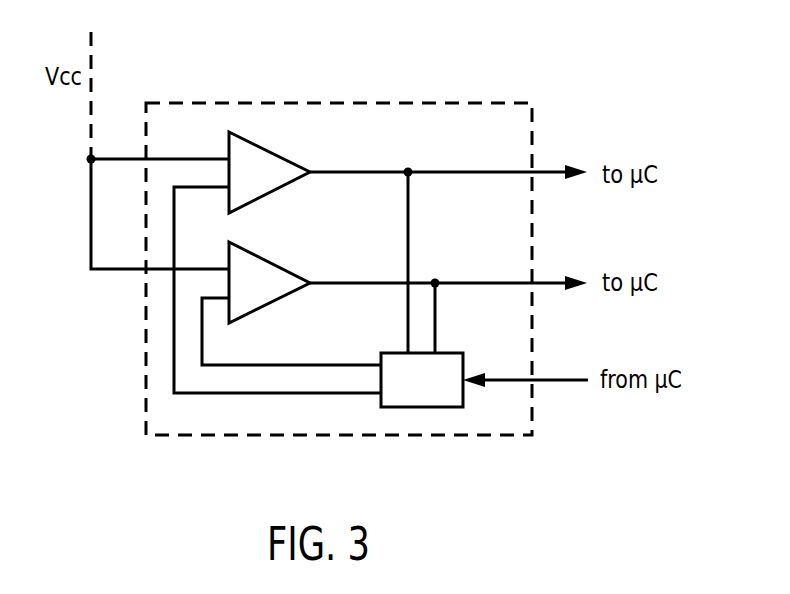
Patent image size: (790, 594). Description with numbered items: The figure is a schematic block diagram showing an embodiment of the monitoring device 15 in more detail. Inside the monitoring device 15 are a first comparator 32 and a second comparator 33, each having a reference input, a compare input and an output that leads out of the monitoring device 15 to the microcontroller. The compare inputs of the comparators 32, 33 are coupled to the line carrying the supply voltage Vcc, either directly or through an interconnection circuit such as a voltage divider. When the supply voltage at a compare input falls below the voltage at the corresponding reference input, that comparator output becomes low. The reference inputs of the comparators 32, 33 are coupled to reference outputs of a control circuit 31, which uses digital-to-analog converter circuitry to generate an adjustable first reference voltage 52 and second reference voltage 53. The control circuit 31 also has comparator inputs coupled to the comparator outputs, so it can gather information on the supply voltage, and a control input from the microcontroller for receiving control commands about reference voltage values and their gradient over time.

The monitoring device 15 is at (462, 103).
The control circuit 31 is at (443, 407).
The first comparator 32 is at (262, 142).
The second comparator 33 is at (262, 257).
The first reference voltage 52 is at (174, 305).
The second reference voltage 53 is at (202, 342).